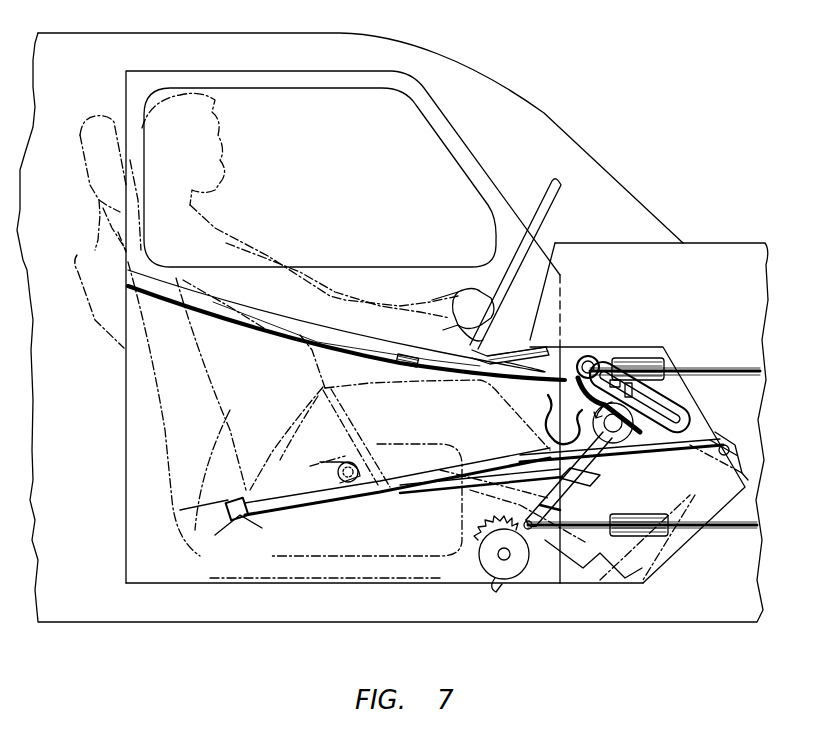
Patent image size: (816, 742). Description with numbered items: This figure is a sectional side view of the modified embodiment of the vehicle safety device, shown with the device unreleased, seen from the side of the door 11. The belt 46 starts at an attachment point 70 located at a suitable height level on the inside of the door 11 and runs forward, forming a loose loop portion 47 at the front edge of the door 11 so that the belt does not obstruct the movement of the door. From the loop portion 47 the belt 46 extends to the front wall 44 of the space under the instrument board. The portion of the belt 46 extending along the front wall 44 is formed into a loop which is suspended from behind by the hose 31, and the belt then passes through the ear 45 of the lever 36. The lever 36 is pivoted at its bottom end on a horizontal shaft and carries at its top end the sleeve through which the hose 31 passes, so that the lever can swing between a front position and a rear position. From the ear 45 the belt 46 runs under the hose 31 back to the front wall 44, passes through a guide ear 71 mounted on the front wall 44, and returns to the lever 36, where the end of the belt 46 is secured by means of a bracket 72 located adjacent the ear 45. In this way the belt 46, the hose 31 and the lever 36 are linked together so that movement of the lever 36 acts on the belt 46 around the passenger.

The door 11 is at (341, 272).
The hose 31 is at (584, 356).
The loop portion 47 is at (560, 417).
The guide ear 71 is at (720, 436).
The attachment point 70 is at (232, 505).
The belt 46 is at (338, 498).
The lever 36 is at (520, 522).
The bracket 72 is at (565, 500).
The ear 45 is at (590, 486).
The front wall 44 is at (742, 473).